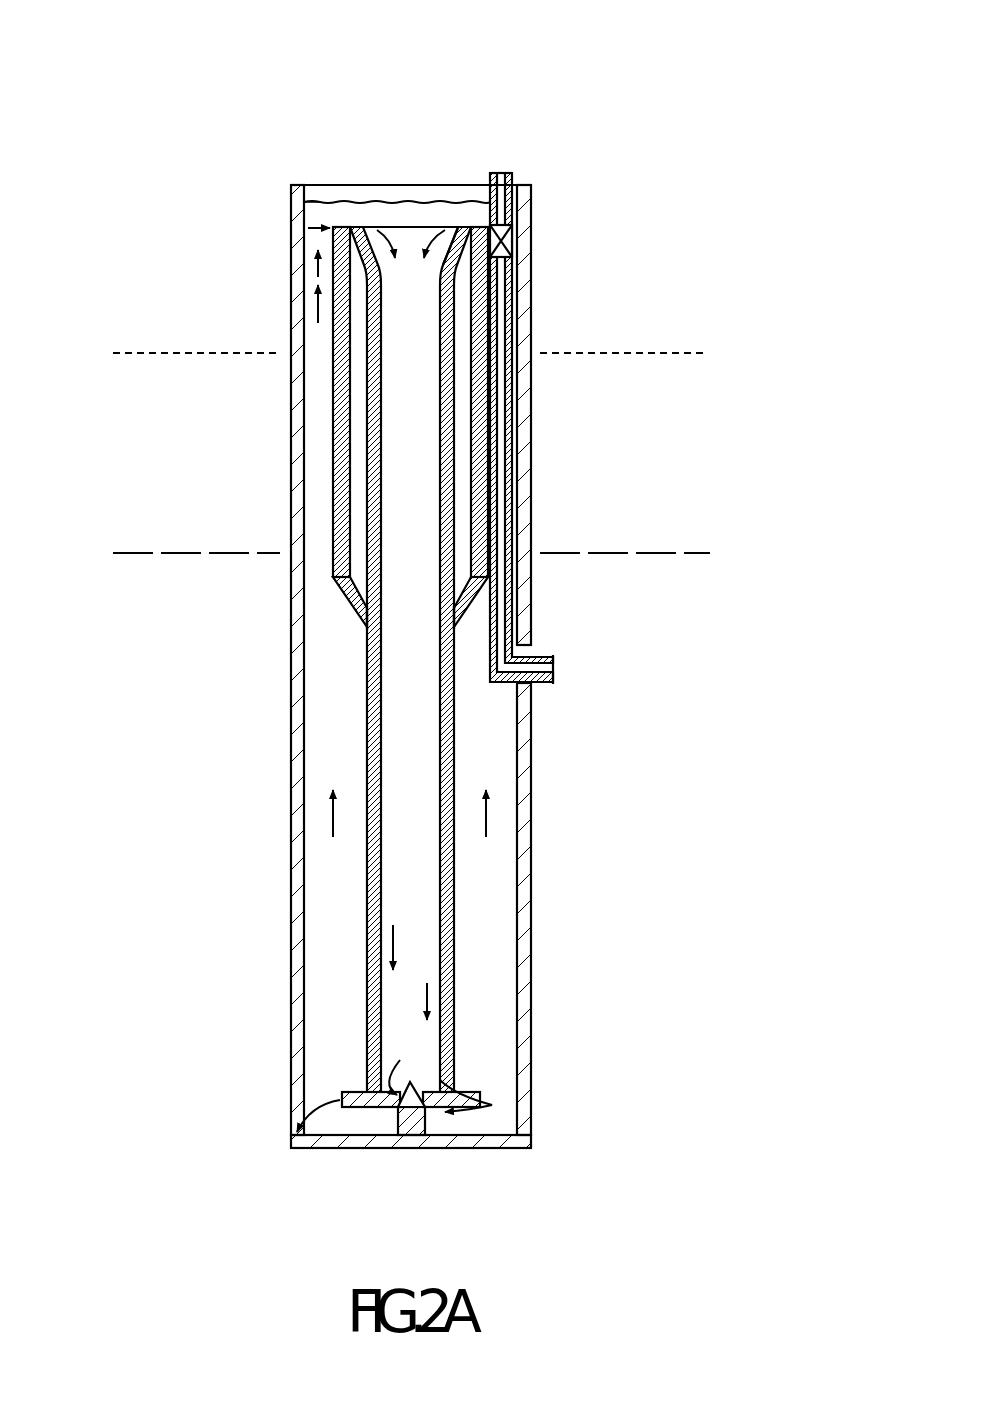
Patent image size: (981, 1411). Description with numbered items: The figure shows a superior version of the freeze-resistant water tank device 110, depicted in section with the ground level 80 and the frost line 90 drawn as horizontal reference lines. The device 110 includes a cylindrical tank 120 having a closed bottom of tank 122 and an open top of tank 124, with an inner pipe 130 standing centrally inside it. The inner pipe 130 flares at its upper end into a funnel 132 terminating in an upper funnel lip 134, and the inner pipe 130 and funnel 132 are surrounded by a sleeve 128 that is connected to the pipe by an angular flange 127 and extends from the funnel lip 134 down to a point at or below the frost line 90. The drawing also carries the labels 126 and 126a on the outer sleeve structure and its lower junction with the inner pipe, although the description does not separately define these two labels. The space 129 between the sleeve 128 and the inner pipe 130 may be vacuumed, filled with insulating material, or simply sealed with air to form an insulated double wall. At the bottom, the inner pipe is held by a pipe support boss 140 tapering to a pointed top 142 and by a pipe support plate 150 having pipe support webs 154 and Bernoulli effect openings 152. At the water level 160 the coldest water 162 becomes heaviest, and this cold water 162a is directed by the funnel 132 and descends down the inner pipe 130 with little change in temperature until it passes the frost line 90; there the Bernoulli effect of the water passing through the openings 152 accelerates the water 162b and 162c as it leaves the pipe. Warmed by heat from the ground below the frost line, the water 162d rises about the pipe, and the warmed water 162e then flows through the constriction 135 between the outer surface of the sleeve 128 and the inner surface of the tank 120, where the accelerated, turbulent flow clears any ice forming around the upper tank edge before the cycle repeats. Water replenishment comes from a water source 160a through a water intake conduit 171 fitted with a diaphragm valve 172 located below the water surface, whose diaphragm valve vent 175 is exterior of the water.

The device 110 is at (348, 639).
The tank 120 is at (522, 420).
The closed bottom of tank 122 is at (507, 1145).
The open top of tank 124 is at (323, 186).
The outer tube 126 is at (392, 408).
The outer tube lower junction 126a is at (367, 615).
The angular flange 127 is at (333, 592).
The sleeve 128 is at (340, 400).
The space between sleeve and pipe 129 is at (357, 455).
The inner pipe 130 is at (432, 659).
The funnel 132 is at (470, 278).
The upper funnel lip 134 is at (531, 203).
The constriction 135 is at (305, 190).
The pipe support boss 140 is at (404, 1128).
The pointed top of pipe support boss 142 is at (440, 1092).
The pipe support plate 150 is at (404, 1130).
The openings in pipe support plate 152 is at (485, 1100).
The pipe support webs 154 is at (345, 1097).
The water level 160 is at (428, 198).
The water source for replenishing water in tank 160a is at (568, 675).
The coldest water starting to descend 162 is at (356, 218).
The cold water being directed and accelerated by funnel 162a is at (313, 238).
The accelerated cold water nearing bottom of pipe 162b is at (427, 997).
The cold water leaving pipe with Bernoulli effect 162c is at (531, 1137).
The warmed water rising about pipe 162d is at (333, 822).
The warmed water flowing between funnel lip and tank edge 162e is at (307, 273).
The water intake conduit 171 is at (595, 400).
The diaphragm valve 172 is at (507, 242).
The diaphragm valve vent 175 is at (498, 180).
The ground level 80 is at (693, 353).
The frost line 90 is at (700, 555).